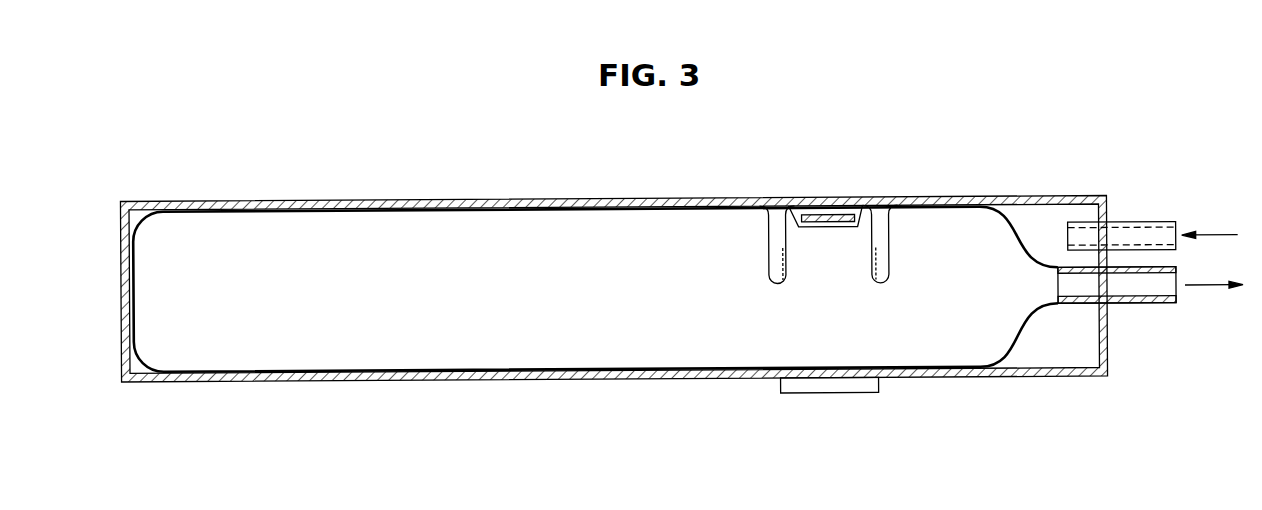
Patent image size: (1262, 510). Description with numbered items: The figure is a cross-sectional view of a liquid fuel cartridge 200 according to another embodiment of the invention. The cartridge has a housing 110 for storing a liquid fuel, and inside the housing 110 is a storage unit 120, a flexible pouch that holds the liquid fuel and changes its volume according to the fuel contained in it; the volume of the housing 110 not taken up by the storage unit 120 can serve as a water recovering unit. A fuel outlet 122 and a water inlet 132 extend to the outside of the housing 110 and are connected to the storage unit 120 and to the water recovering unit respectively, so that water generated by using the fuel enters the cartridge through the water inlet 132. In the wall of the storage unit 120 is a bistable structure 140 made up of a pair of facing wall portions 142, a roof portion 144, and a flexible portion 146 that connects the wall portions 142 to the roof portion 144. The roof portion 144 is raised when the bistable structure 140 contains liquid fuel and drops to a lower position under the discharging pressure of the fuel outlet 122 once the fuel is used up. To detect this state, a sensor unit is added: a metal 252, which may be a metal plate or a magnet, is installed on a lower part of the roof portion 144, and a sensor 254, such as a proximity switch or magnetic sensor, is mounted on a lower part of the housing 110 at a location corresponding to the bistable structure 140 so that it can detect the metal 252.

The liquid fuel cartridge 200 is at (330, 144).
The housing 110 is at (665, 382).
The storage unit 120 is at (1015, 346).
The fuel outlet 122 is at (1150, 311).
The water inlet 132 is at (1150, 228).
The bistable structure 140 is at (819, 226).
The wall portions 142 is at (872, 276).
The roof portion 144 is at (850, 212).
The flexible portion 146 is at (777, 206).
The metal 252 is at (822, 231).
The sensor 254 is at (827, 397).